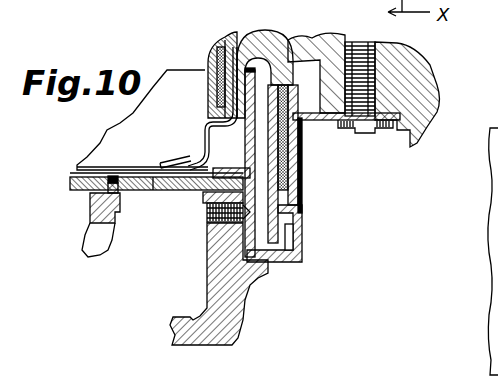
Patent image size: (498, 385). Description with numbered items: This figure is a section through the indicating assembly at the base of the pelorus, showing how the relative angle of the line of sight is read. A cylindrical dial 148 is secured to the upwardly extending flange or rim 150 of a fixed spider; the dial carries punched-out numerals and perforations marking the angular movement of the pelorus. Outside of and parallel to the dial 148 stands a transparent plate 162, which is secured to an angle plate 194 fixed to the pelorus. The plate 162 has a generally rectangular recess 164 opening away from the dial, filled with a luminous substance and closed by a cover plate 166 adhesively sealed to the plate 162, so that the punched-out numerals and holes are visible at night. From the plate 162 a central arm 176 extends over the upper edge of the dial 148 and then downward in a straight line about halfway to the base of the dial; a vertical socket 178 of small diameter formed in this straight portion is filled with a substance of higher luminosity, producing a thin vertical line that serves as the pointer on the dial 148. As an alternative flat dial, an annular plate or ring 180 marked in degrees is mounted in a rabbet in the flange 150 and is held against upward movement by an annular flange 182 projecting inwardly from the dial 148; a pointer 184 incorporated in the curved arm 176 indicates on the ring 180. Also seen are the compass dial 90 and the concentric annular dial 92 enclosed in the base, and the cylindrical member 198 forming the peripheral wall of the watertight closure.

The compass dial 90 is at (86, 196).
The annular dial 92 is at (140, 193).
The cylindrical dial 148 is at (142, 120).
The flange or rim 150 is at (246, 297).
The plate 162 is at (294, 80).
The recess 164 is at (300, 150).
The cover plate 166 is at (358, 46).
The central arm 176 is at (208, 82).
The vertical socket 178 is at (222, 45).
The annular plate or ring 180 is at (186, 192).
The annular flange 182 is at (222, 167).
The pointer 184 is at (176, 158).
The angle plate 194 is at (302, 178).
The cylindrical member 198 is at (420, 135).